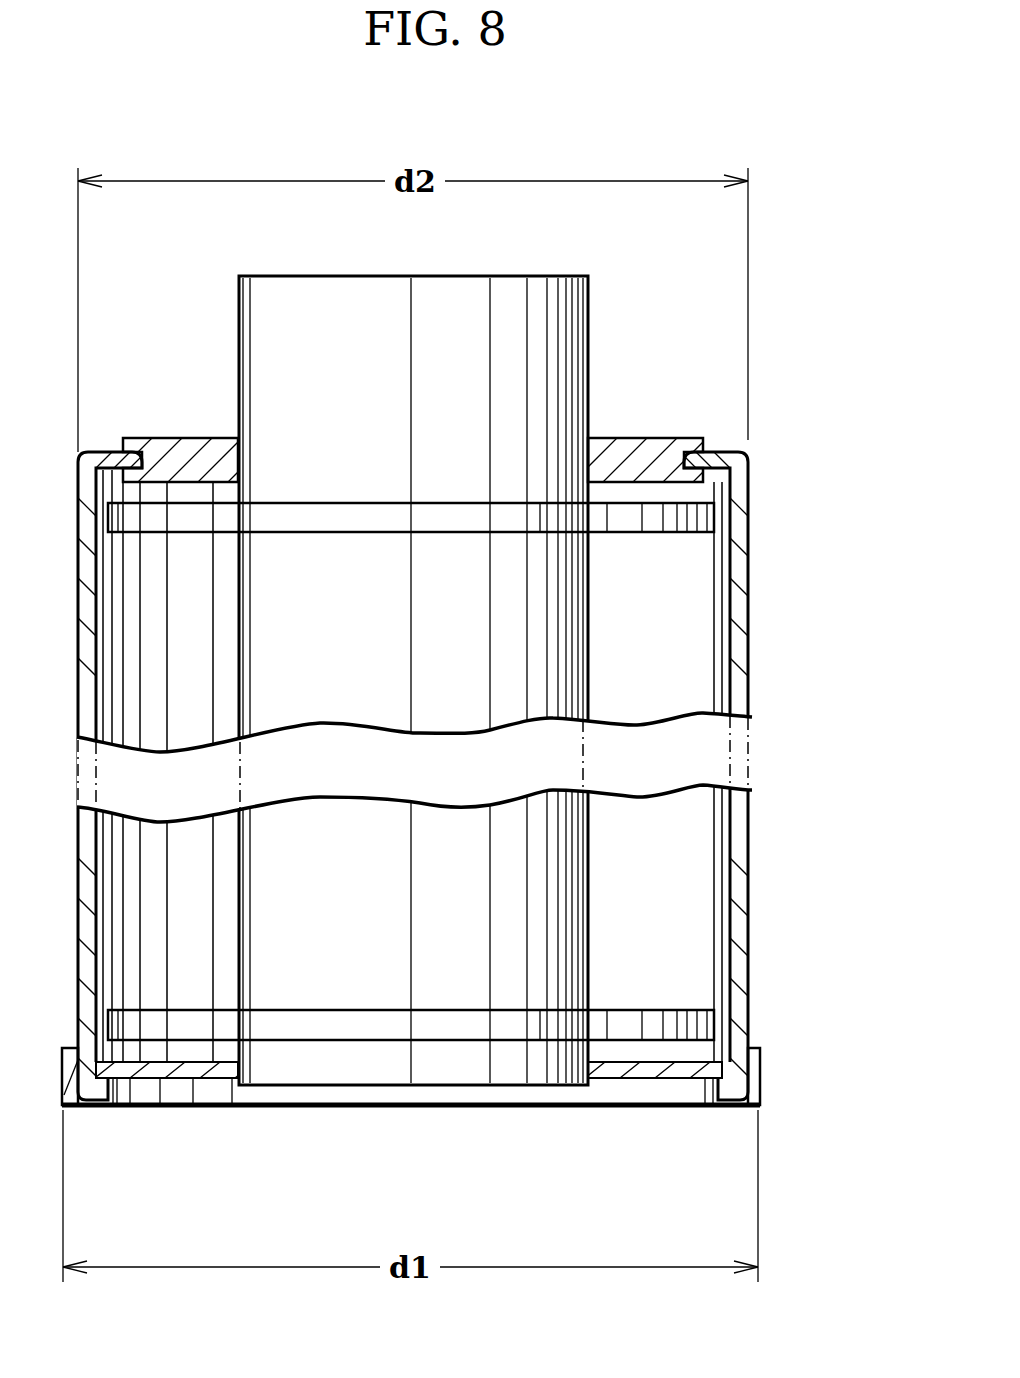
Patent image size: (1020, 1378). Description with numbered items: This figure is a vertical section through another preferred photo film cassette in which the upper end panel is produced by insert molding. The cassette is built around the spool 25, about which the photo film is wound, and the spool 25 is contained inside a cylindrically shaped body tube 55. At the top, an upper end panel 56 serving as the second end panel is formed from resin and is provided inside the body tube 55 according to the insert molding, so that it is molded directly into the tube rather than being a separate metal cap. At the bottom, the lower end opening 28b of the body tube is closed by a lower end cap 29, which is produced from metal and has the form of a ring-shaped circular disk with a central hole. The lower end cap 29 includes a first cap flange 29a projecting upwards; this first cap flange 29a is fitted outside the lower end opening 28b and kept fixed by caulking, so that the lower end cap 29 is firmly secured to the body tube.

The spool 25 is at (598, 320).
The body tube 55 is at (749, 660).
The upper end panel 56 is at (168, 438).
The lower end opening 28b is at (718, 1032).
The lower end cap 29 is at (630, 1110).
The first cap flange 29a is at (752, 1070).